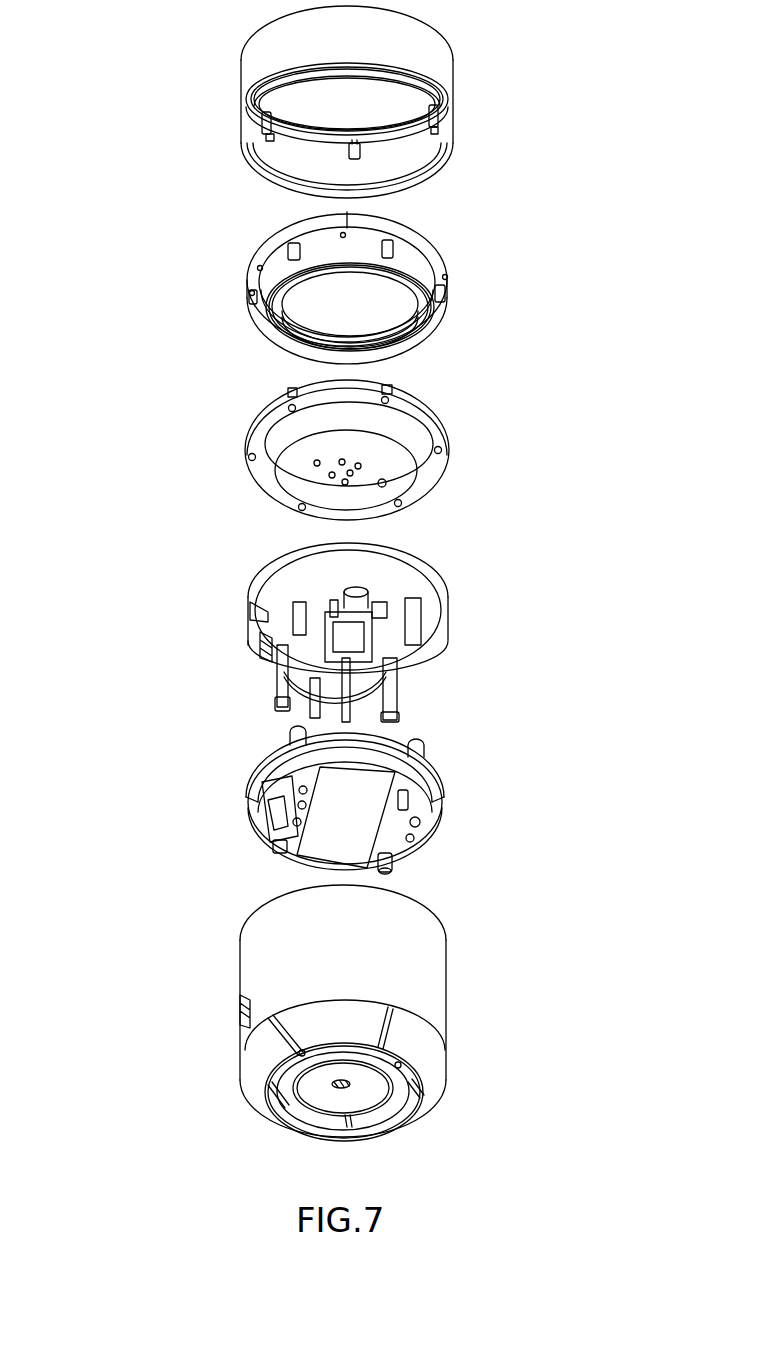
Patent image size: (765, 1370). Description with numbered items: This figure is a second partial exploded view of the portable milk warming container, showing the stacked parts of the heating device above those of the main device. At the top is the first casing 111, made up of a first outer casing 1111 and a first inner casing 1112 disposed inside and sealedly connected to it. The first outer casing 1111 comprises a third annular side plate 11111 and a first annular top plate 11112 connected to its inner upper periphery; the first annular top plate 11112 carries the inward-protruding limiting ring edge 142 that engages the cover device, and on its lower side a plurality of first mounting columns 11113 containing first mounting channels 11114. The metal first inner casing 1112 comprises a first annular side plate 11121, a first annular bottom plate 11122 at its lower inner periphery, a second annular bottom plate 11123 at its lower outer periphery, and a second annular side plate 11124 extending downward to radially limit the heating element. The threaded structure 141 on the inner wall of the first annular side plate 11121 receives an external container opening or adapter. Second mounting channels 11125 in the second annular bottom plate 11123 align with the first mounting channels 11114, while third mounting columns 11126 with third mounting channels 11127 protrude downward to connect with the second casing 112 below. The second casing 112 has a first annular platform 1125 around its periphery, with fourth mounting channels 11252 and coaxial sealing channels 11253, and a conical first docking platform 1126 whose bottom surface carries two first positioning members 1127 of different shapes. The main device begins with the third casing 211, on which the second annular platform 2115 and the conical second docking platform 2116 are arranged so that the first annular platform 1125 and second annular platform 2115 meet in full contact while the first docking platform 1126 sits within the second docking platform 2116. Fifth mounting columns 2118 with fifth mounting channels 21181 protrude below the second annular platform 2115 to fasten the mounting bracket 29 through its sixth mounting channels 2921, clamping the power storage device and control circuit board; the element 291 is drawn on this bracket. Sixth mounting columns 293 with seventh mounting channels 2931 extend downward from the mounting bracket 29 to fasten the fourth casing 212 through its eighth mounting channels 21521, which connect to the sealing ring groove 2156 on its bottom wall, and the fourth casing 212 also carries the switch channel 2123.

The first casing 111 is at (148, 228).
The first outer casing 1111 is at (250, 85).
The third annular side plate 11111 is at (420, 160).
The first annular top plate 11112 is at (388, 132).
The first mounting columns 11113 is at (266, 128).
The first mounting channels 11114 is at (276, 142).
The limiting ring edge 142 is at (385, 120).
The first inner casing 1112 is at (268, 245).
The first annular side plate 11121 is at (408, 242).
The first annular bottom plate 11122 is at (432, 326).
The second annular bottom plate 11123 is at (440, 274).
The second annular side plate 11124 is at (432, 284).
The second mounting channels 11125 is at (250, 276).
The third mounting columns 11126 is at (250, 300).
The third mounting channels 11127 is at (256, 322).
The threaded structure 141 is at (366, 322).
The second casing 112 is at (265, 415).
The first annular platform 1125 is at (430, 430).
The first docking platform 1126 is at (400, 483).
The first positioning members 1127 is at (405, 480).
The fourth mounting channels 11252 is at (250, 465).
The sealing channels 11253 is at (258, 480).
The third casing 211 is at (268, 586).
The second annular platform 2115 is at (432, 655).
The second docking platform 2116 is at (403, 657).
The fifth mounting columns 2118 is at (275, 668).
The fifth mounting channels 21181 is at (277, 706).
The mounting bracket 29 is at (250, 790).
The battery 291 is at (285, 855).
The sixth mounting channels 2921 is at (440, 805).
The sixth mounting columns 293 is at (395, 857).
The seventh mounting channels 2931 is at (385, 870).
The fourth casing 212 is at (430, 990).
The sealing ring groove 2156 is at (262, 1093).
The eighth mounting channels 21521 is at (270, 1125).
The switch channel 2123 is at (362, 1085).